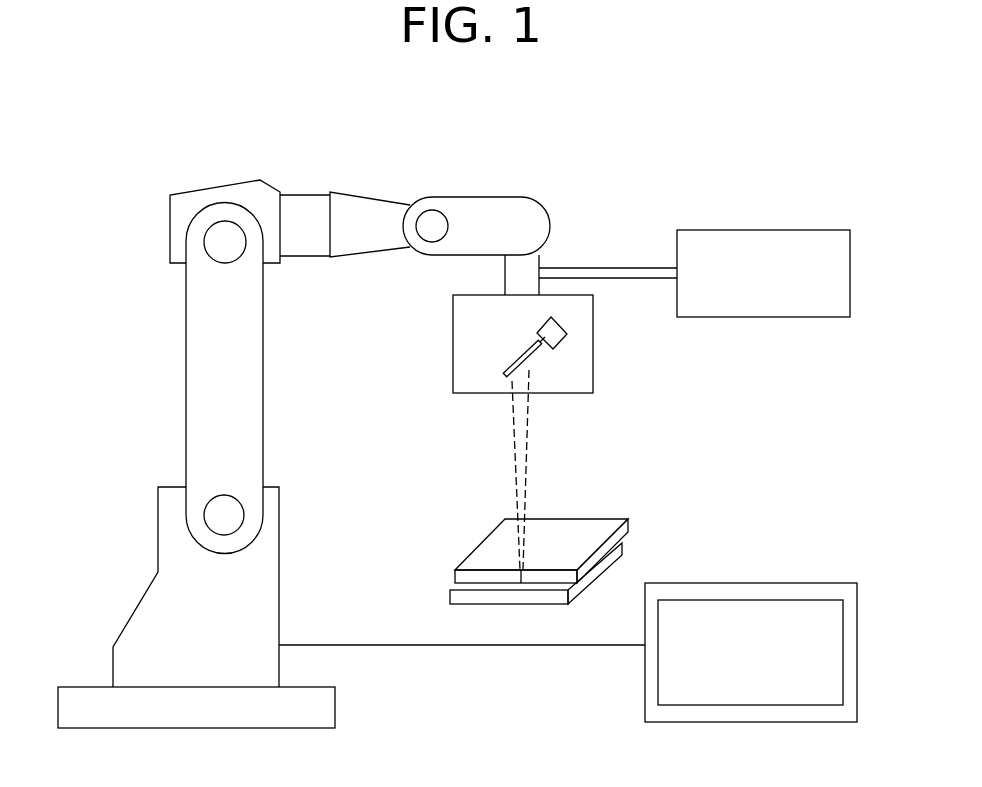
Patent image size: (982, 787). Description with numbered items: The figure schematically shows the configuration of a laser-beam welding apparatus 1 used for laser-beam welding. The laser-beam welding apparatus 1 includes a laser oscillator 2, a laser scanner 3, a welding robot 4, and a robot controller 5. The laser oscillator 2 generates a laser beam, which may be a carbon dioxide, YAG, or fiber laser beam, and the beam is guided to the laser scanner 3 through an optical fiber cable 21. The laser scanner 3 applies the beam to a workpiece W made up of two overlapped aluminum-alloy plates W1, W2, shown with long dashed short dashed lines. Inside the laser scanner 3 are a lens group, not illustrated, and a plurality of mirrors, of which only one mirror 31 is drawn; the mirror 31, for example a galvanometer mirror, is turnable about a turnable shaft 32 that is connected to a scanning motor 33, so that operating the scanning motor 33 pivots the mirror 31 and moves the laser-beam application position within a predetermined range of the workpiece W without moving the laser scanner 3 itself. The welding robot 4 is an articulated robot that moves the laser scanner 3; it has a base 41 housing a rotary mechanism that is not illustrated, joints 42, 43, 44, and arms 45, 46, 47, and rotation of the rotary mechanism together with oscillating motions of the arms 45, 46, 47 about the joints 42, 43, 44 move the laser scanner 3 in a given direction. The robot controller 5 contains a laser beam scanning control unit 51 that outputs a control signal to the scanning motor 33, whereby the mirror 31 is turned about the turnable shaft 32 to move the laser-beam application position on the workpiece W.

The laser-beam welding apparatus 1 is at (95, 70).
The laser oscillator 2 is at (753, 230).
The optical fiber cable 21 is at (610, 266).
The laser scanner 3 is at (593, 372).
The mirror 31 is at (522, 357).
The turnable shaft 32 is at (538, 340).
The scanning motor 33 is at (562, 323).
The welding robot 4 is at (242, 176).
The base 41 is at (150, 608).
The joint 42 is at (232, 517).
The joint 43 is at (233, 247).
The joint 44 is at (430, 218).
The arm 45 is at (247, 370).
The arm 46 is at (365, 203).
The arm 47 is at (492, 203).
The robot controller 5 is at (818, 583).
The laser beam scanning control unit 51 is at (752, 598).
The workpiece W is at (479, 530).
The aluminum-alloy plate W1 is at (490, 563).
The aluminum-alloy plate W2 is at (480, 607).